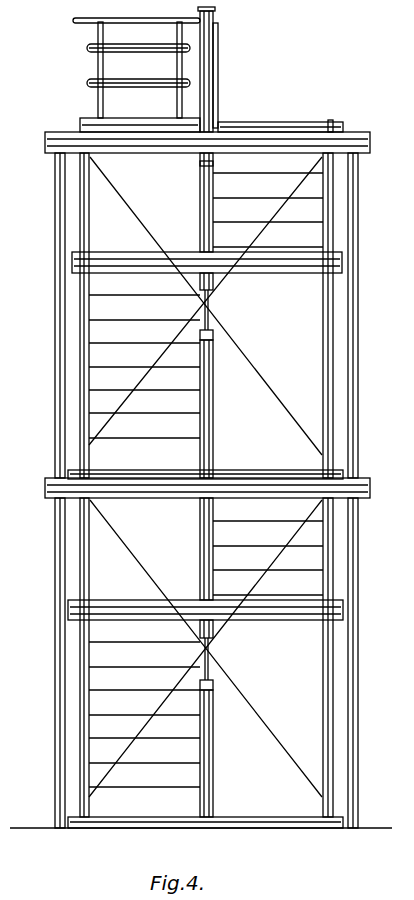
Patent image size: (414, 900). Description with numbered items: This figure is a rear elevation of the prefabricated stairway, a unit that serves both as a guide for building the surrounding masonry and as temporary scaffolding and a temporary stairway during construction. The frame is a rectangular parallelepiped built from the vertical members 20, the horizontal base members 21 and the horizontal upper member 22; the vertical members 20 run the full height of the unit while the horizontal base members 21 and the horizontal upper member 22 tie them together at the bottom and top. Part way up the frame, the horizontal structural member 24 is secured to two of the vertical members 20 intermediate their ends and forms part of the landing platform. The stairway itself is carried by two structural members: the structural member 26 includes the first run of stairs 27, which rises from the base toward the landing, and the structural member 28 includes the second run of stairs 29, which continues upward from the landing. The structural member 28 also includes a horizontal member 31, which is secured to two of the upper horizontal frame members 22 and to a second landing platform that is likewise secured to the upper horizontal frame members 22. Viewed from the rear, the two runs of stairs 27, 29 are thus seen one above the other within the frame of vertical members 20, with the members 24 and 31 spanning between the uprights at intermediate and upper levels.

The vertical members 20 is at (63, 372).
The horizontal base members 21 is at (257, 475).
The horizontal upper member 22 is at (178, 140).
The horizontal structural member 24 is at (255, 262).
The structural member 26 is at (207, 306).
The first run of stairs 27 is at (184, 407).
The structural member 28 is at (333, 124).
The second run of stairs 29 is at (317, 215).
The horizontal member 31 is at (370, 146).